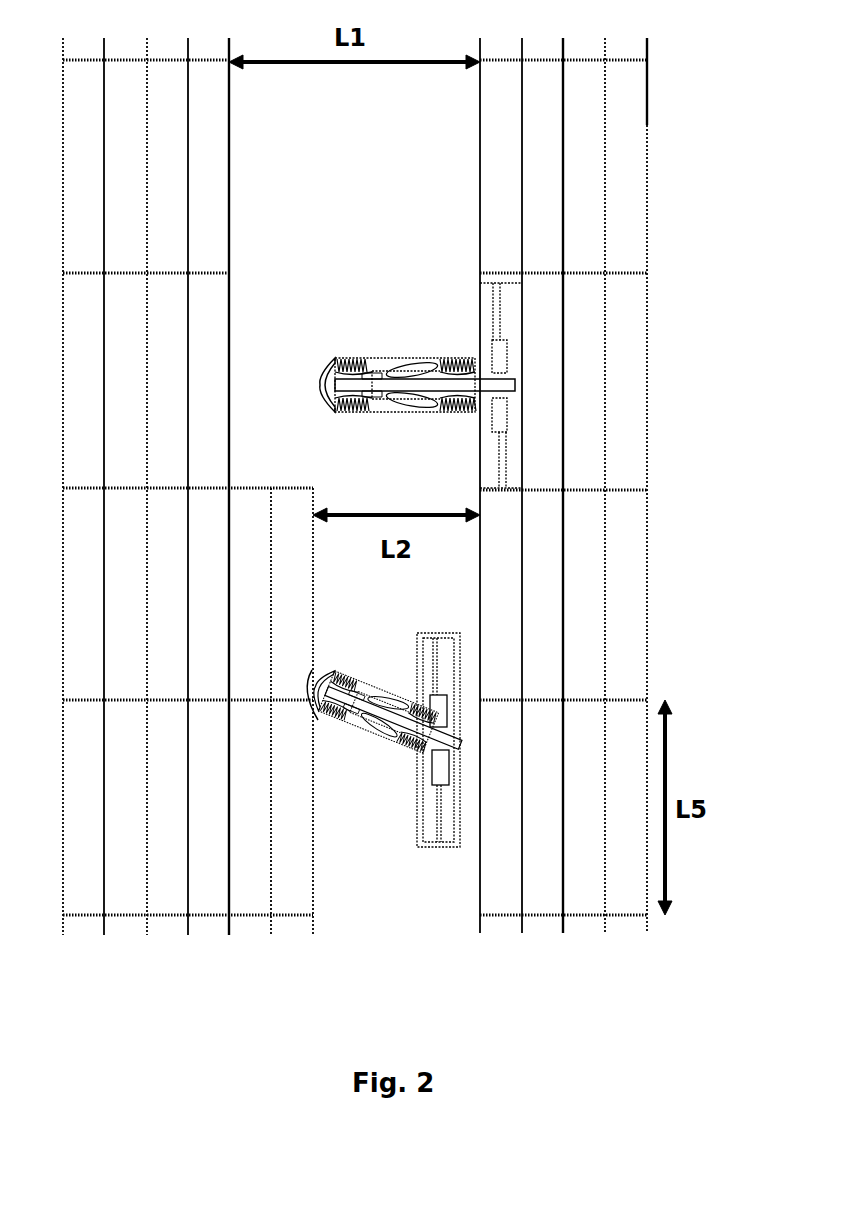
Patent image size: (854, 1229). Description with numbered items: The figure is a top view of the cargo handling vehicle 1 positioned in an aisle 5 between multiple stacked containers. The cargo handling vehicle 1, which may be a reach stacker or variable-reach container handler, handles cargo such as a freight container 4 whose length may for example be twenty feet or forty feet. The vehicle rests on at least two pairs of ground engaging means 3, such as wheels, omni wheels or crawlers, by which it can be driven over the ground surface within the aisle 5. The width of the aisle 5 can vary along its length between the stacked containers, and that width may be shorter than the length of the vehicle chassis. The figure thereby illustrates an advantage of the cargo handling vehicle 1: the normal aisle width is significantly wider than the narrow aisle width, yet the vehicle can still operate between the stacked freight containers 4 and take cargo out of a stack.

The cargo handling vehicle 1 is at (400, 656).
The ground engaging means 3 is at (338, 725).
The freight container 4 is at (622, 190).
The aisle 5 is at (447, 930).